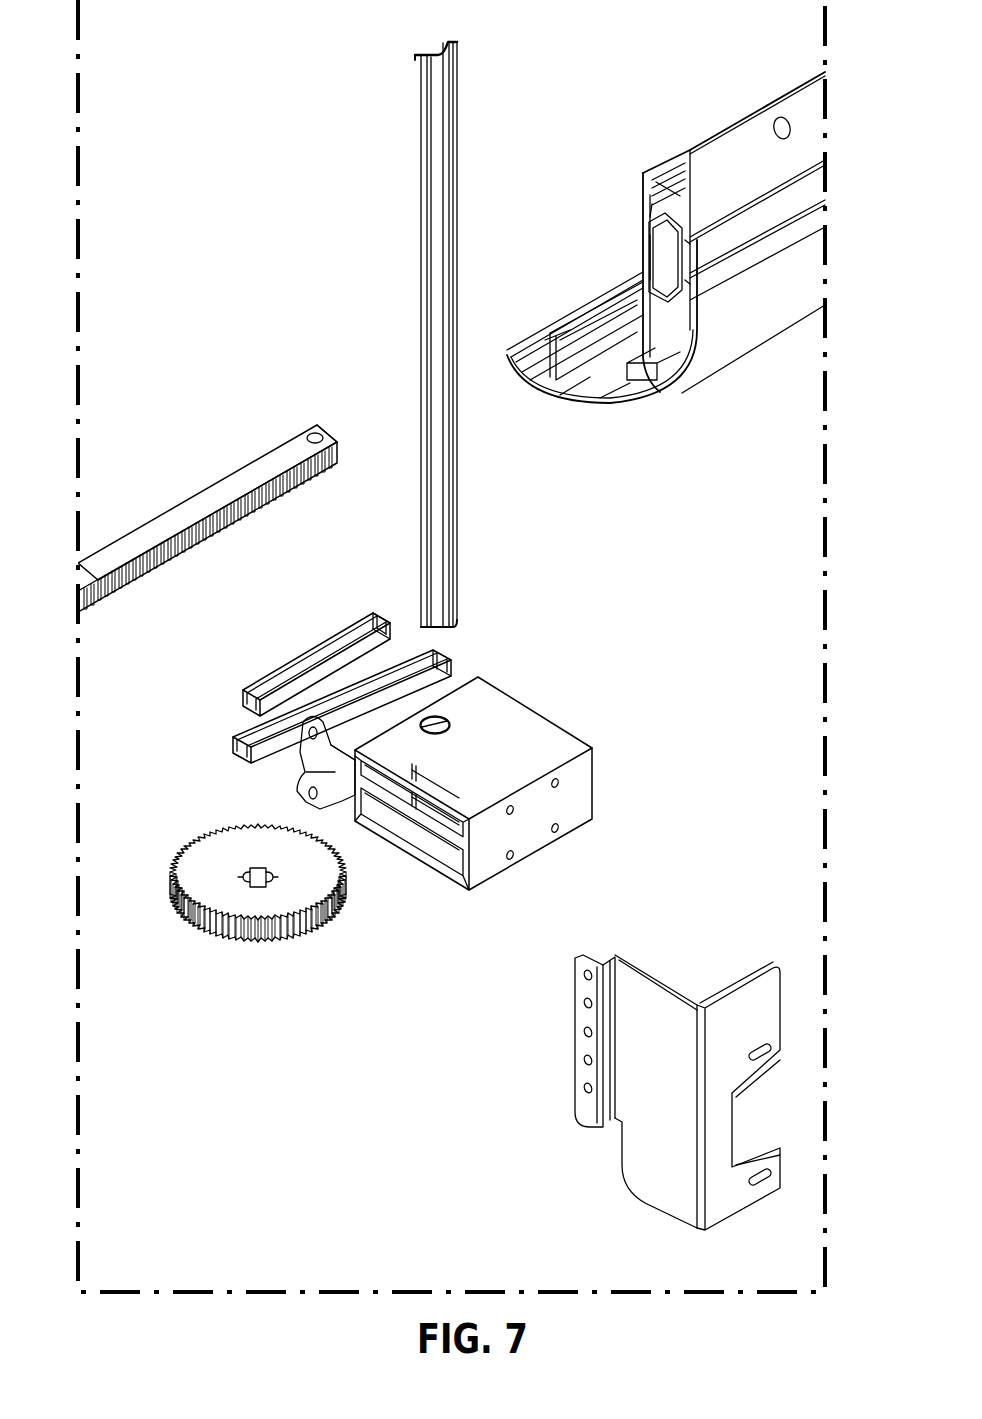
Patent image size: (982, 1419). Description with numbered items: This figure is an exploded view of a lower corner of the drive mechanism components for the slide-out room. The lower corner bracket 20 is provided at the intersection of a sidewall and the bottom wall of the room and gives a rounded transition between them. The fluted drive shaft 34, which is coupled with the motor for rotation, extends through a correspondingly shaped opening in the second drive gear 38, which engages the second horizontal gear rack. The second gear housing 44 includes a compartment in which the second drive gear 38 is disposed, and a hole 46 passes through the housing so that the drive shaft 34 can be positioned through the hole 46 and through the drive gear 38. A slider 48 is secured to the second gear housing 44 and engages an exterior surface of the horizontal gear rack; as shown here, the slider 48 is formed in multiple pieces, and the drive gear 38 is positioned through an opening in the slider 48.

The lower corner bracket 20 is at (763, 290).
The drive shaft 34 is at (435, 158).
The second drive gear 38 is at (250, 910).
The second gear housing 44 is at (563, 813).
The hole 46 is at (453, 720).
The slider 48 is at (222, 723).